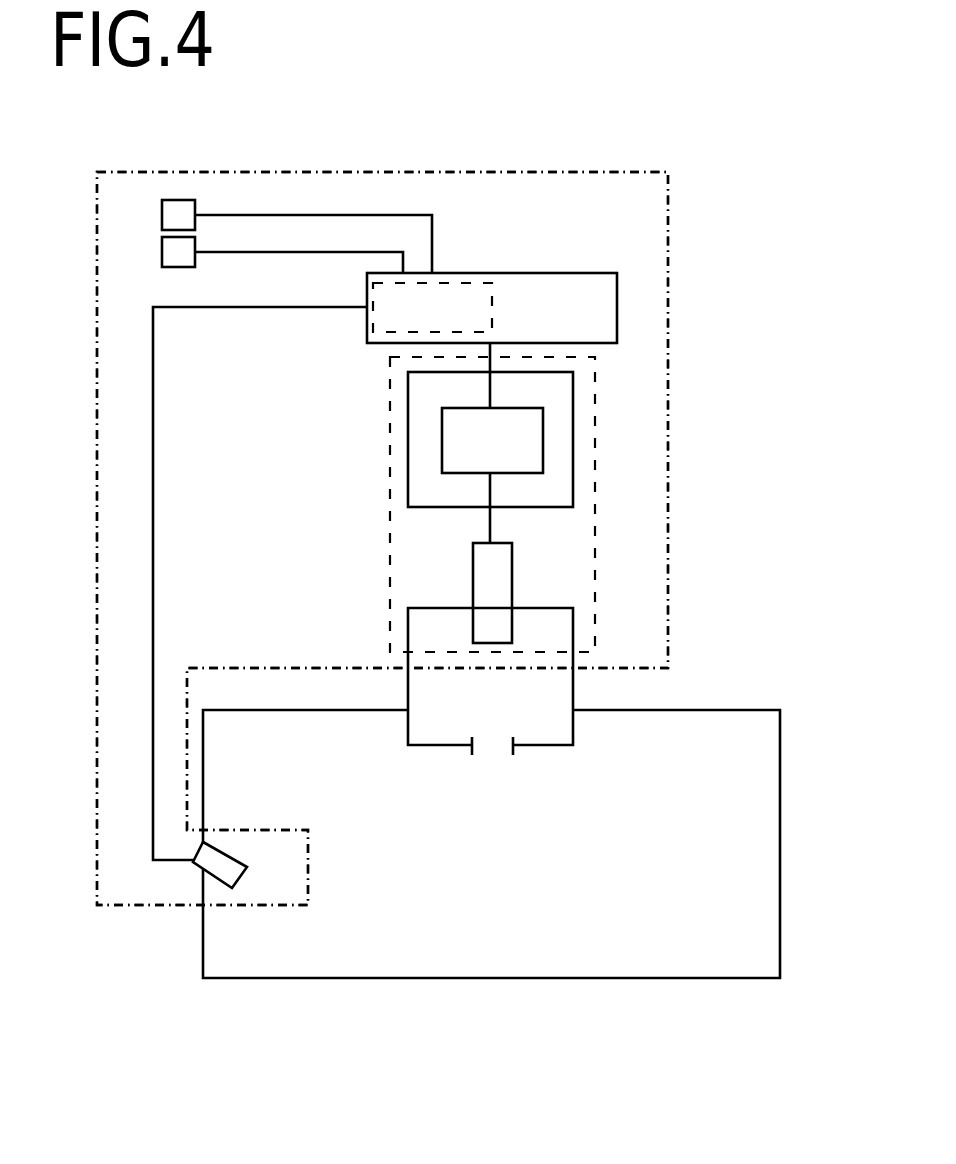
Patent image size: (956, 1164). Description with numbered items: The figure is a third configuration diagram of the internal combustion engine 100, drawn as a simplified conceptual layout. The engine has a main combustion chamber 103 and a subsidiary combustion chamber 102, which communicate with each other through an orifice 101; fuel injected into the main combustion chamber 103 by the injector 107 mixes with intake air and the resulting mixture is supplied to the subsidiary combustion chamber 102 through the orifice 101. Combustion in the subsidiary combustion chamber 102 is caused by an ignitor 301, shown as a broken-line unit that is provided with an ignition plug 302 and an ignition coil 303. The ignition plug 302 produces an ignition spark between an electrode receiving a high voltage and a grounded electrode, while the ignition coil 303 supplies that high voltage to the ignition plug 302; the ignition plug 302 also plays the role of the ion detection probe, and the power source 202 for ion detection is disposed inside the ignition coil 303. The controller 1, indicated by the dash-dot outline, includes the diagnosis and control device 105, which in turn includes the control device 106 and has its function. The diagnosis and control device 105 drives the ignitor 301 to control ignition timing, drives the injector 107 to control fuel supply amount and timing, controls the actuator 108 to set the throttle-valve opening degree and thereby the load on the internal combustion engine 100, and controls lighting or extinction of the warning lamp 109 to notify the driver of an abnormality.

The controller 1 is at (633, 172).
The internal combustion engine 100 is at (700, 603).
The orifice 101 is at (492, 750).
The subsidiary combustion chamber 102 is at (577, 732).
The main combustion chamber 103 is at (747, 710).
The diagnosis and control device 105 is at (587, 273).
The control device 106 is at (477, 283).
The injector 107 is at (200, 868).
The actuator 108 is at (178, 201).
The warning lamp 109 is at (163, 257).
The power source 202 is at (442, 457).
The ignitor 301 is at (595, 488).
The ignition plug 302 is at (473, 580).
The ignition coil 303 is at (573, 402).